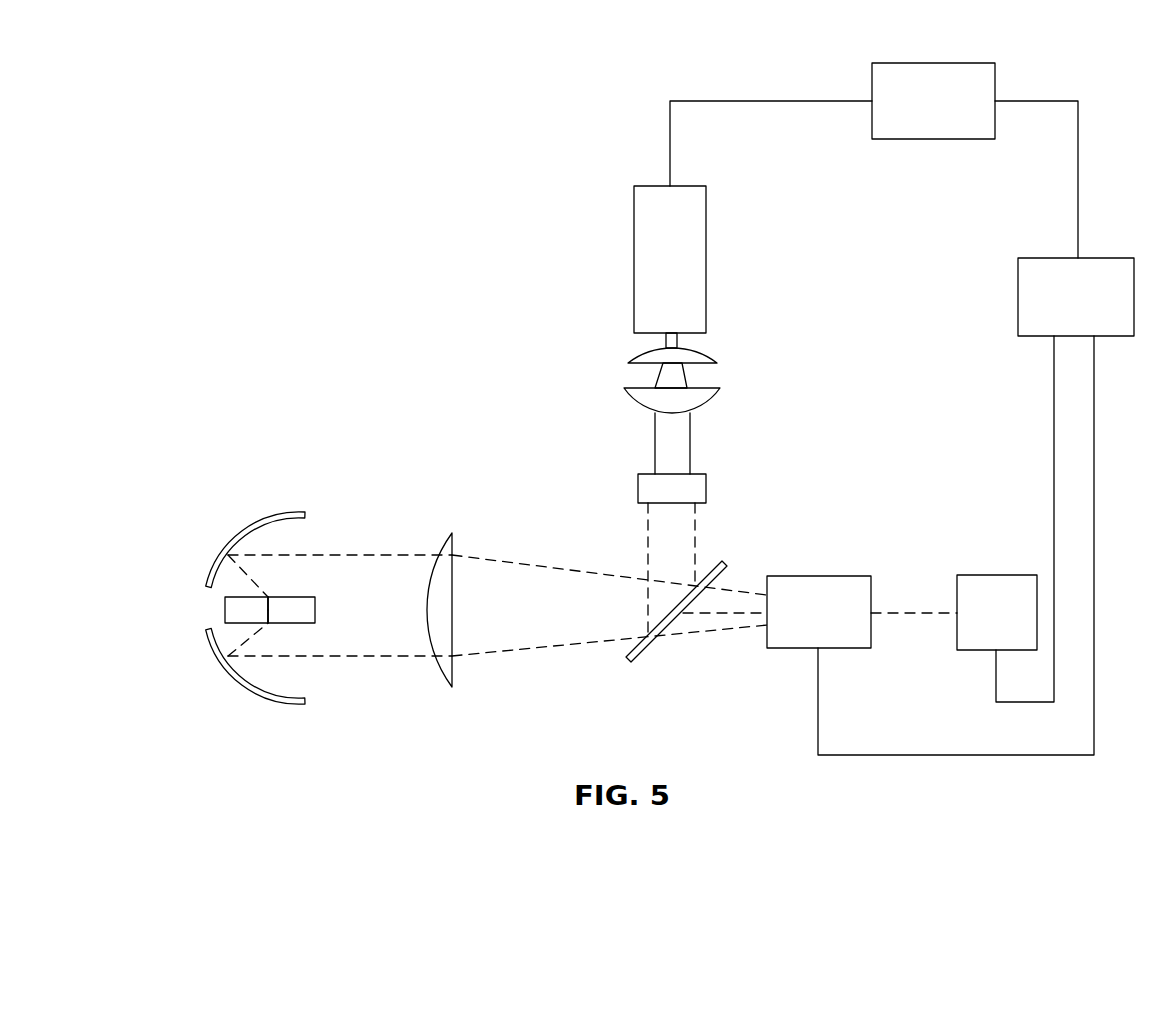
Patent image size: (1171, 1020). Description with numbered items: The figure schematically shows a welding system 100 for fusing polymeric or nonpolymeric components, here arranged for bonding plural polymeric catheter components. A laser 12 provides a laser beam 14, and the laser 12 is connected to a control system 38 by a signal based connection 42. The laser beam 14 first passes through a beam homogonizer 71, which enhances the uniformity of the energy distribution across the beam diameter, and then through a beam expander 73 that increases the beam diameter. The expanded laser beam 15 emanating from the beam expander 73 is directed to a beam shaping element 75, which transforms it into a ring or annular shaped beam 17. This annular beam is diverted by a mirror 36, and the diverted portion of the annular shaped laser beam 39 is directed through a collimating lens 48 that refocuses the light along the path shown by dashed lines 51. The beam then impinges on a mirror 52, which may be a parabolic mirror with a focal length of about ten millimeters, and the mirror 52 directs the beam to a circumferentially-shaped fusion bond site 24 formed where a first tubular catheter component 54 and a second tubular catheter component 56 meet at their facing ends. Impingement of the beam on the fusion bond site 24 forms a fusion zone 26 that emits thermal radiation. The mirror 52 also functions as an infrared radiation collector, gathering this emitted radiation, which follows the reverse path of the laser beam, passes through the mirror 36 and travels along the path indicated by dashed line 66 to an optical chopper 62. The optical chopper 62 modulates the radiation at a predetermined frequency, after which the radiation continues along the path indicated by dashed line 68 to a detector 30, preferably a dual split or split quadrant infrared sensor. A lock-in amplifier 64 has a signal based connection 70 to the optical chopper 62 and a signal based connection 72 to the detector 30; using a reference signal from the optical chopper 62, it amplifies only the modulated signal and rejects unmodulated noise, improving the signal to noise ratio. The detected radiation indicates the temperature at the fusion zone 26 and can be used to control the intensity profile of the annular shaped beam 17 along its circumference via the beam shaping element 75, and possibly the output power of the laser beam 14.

The welding system 100 is at (434, 325).
The laser 12 is at (670, 259).
The signal based connection 42 is at (762, 100).
The control system 38 is at (975, 160).
The lock-in amplifier 64 is at (1076, 297).
The signal based connection 72 is at (1054, 456).
The detector 30 is at (997, 612).
The signal based connection 70 is at (1094, 612).
The optical chopper 62 is at (819, 612).
The dashed line 68 is at (940, 612).
The dashed line 66 is at (730, 615).
The mirror 36 is at (643, 650).
The annular shaped beam 17 is at (695, 535).
The beam shaping element 75 is at (706, 483).
The expanded laser beam 15 is at (692, 438).
The beam expander 73 is at (637, 400).
The beam homogonizer 71 is at (640, 358).
The laser beam 14 is at (682, 338).
The collimating lens 48 is at (428, 607).
The diverted portion of the annular shaped laser beam 39 is at (488, 558).
The dashed lines 51 is at (380, 556).
The mirror 52 is at (240, 547).
The second tubular catheter component 56 is at (225, 605).
The first tubular catheter component 54 is at (315, 610).
The fusion zone 26 is at (268, 597).
The fusion bond site 24 is at (268, 620).